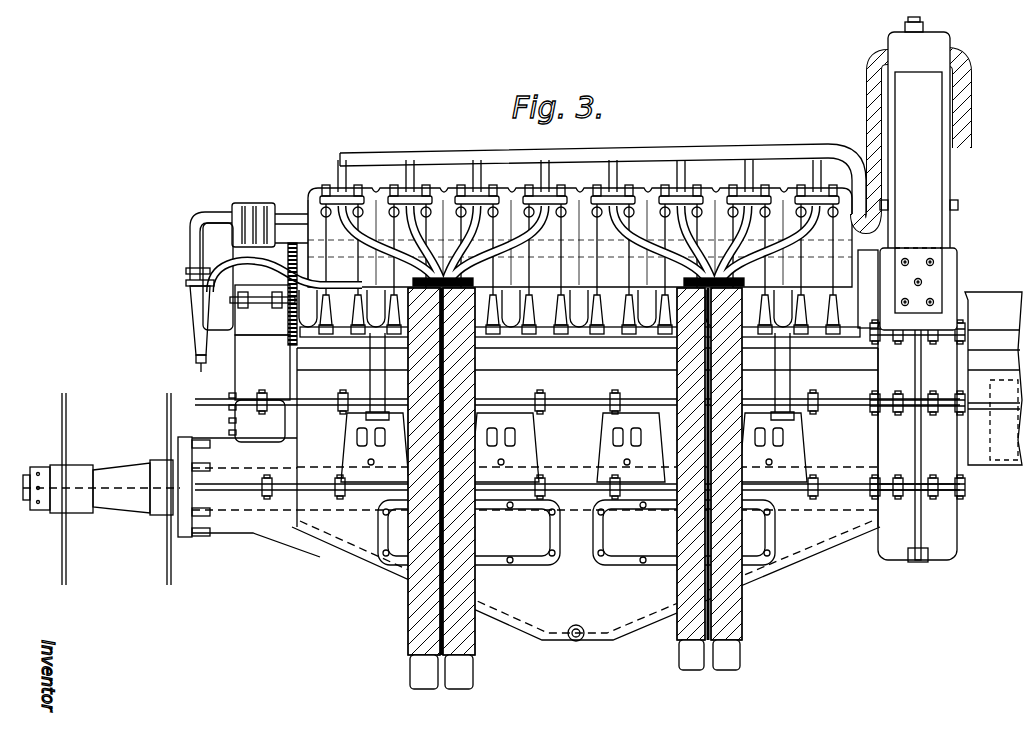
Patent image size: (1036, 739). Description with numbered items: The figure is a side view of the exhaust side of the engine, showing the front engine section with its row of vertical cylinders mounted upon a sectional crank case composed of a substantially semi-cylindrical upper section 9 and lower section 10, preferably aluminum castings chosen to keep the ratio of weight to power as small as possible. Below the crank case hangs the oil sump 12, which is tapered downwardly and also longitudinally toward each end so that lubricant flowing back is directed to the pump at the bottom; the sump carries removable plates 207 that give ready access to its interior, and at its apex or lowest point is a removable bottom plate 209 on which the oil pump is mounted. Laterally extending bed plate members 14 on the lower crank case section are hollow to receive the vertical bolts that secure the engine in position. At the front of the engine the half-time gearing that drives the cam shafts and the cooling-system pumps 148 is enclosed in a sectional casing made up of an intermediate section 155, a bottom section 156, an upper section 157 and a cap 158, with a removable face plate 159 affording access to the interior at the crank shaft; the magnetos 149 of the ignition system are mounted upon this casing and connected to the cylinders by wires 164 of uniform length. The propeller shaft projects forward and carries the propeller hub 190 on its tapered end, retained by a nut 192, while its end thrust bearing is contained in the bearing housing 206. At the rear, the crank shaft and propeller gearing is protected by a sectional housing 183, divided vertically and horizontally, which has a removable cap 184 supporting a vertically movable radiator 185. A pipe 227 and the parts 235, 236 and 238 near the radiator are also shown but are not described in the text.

The upper crank case section 9 is at (587, 407).
The lower crank case section 10 is at (577, 454).
The oil sump 12 is at (586, 580).
The bed plate members 14 is at (615, 447).
The pumps 148 is at (212, 345).
The magnetos 149 is at (238, 208).
The intermediate section 155 is at (256, 372).
The bottom section 156 is at (255, 424).
The upper section 157 is at (248, 326).
The cap 158 is at (262, 300).
The removable face plate 159 is at (233, 397).
The wires 164 is at (812, 240).
The sectional housing 183 is at (935, 462).
The removable cap 184 is at (950, 294).
The radiator 185 is at (950, 187).
The propeller hub 190 is at (98, 478).
The nut 192 is at (42, 473).
The bearing housing 206 is at (238, 520).
The removable plates 207 is at (576, 532).
The removable bottom plate 209 is at (553, 644).
The oil pipe 227 is at (790, 386).
The filler cap 235 is at (905, 36).
The flexible pipe 236 is at (868, 63).
The gauge glass 238 is at (905, 103).